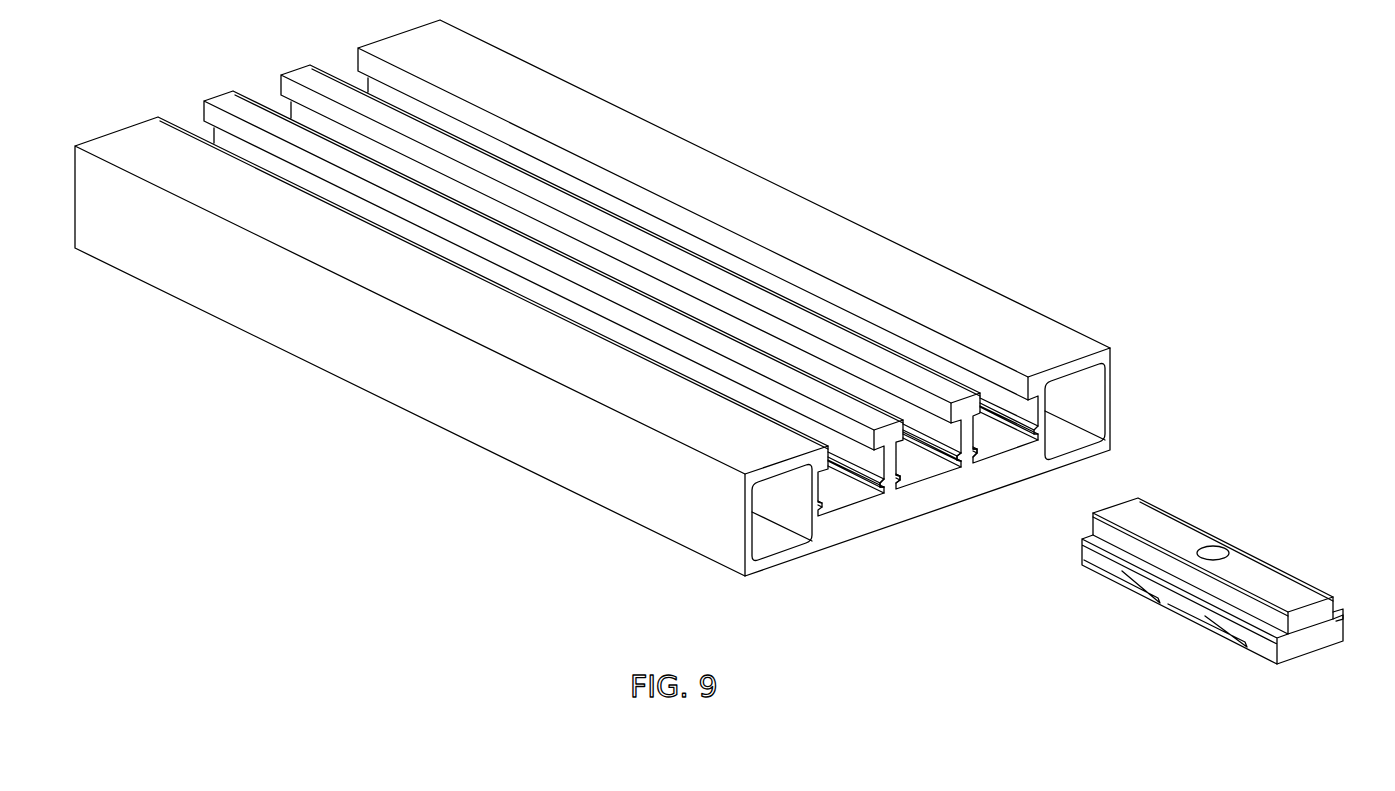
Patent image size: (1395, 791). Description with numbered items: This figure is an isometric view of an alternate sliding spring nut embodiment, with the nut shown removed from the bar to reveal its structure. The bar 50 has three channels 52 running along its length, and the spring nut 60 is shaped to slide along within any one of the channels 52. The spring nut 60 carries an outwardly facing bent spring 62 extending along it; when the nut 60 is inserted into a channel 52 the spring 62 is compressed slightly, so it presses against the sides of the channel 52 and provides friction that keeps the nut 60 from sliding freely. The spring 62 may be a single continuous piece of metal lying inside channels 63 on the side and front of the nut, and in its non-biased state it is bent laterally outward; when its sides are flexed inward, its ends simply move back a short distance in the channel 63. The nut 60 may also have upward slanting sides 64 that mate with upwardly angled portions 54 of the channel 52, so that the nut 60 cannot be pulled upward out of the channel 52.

The bar 50 is at (891, 189).
The channels 52 is at (586, 256).
The upwardly angled portions 54 is at (927, 414).
The spring nut 60 is at (1257, 568).
The bent spring 62 is at (1170, 606).
The channels 63 is at (1082, 568).
The upward slanting sides 64 is at (1336, 605).